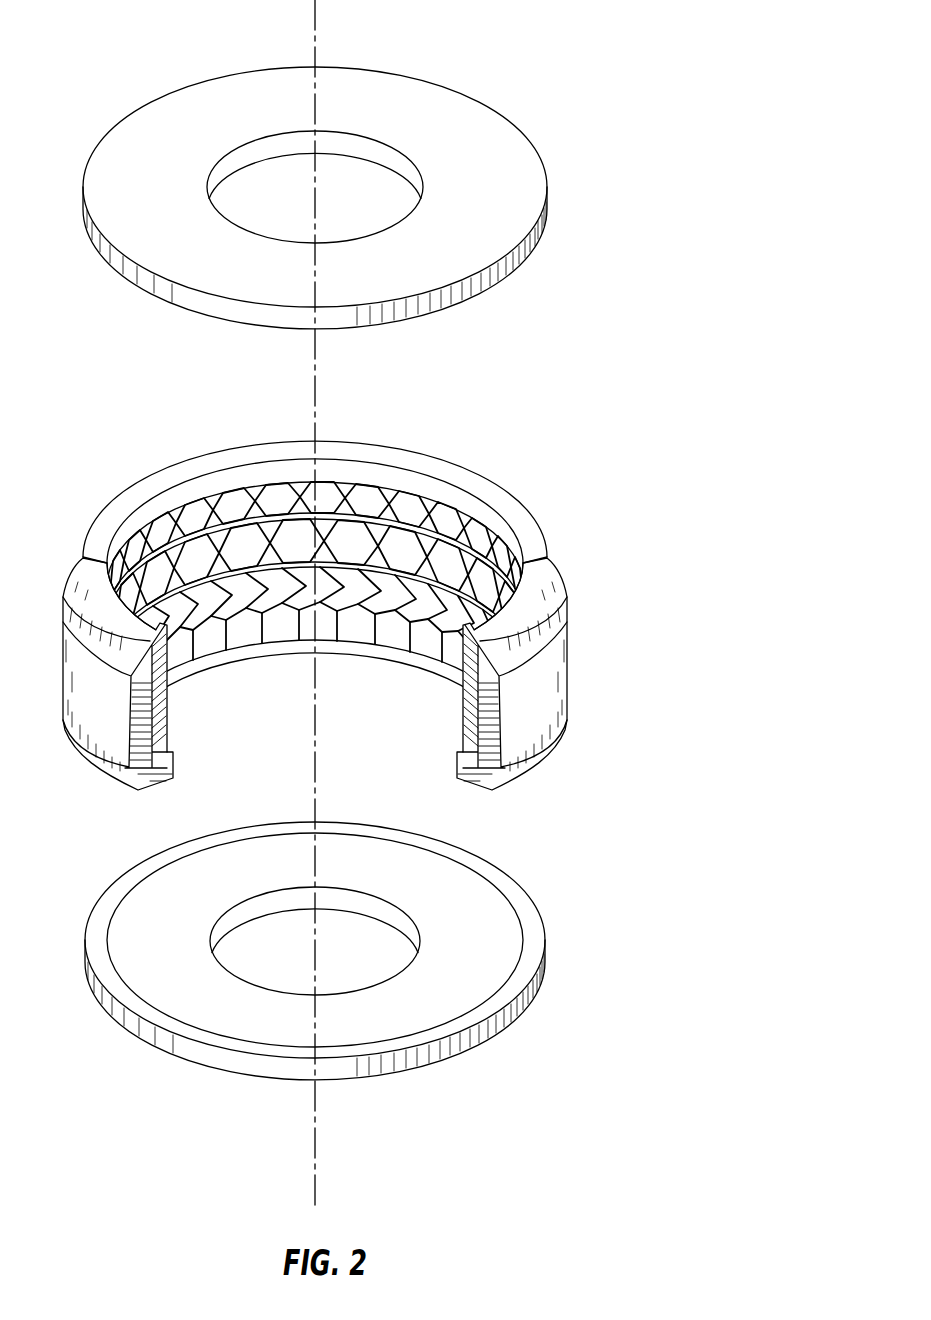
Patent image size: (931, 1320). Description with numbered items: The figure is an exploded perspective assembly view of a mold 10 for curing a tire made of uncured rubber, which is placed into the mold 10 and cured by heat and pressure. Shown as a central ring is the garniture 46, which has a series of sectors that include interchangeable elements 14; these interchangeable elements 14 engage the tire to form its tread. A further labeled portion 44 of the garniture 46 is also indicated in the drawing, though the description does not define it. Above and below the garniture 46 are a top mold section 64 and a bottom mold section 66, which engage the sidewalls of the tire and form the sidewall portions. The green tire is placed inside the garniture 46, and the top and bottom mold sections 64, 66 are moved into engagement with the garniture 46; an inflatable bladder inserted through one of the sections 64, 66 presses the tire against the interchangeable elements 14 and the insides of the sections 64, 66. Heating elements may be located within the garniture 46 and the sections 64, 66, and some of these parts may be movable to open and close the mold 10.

The mold 10 is at (348, 588).
The interchangeable elements 14 is at (372, 497).
The first housing half 44 is at (121, 506).
The garniture 46 is at (558, 581).
The top mold section 64 is at (482, 126).
The bottom mold section 66 is at (538, 940).